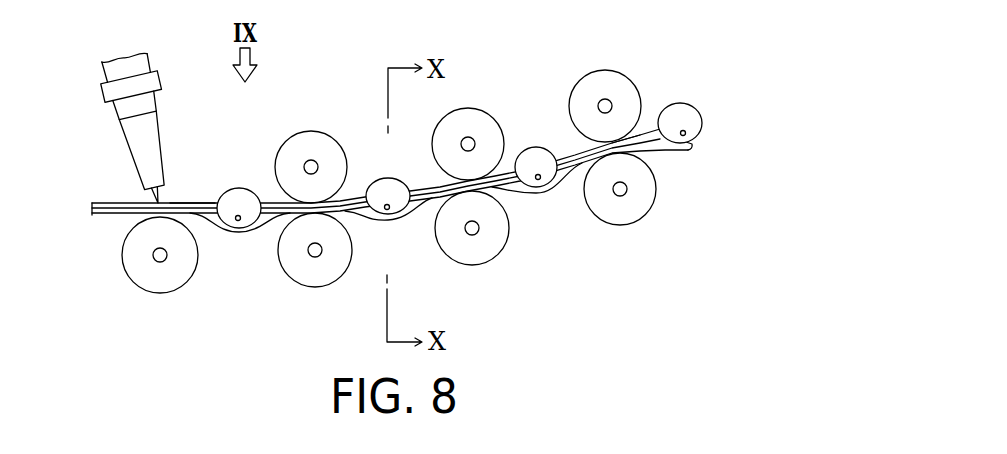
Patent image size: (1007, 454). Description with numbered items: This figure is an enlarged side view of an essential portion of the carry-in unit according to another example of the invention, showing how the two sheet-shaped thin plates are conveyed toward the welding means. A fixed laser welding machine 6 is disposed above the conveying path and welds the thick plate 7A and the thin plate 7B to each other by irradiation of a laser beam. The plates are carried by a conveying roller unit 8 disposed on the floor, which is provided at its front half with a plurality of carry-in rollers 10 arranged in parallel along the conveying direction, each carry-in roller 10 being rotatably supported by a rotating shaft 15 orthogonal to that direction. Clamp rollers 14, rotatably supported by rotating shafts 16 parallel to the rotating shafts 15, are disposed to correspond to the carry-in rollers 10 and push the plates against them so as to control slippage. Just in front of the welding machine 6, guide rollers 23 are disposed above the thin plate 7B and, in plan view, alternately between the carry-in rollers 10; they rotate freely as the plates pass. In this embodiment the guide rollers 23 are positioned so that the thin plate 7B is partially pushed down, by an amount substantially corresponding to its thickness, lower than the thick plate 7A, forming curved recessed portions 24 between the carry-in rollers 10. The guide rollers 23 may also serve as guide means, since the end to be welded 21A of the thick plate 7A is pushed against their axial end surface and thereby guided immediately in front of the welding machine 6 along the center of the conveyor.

The laser welding machine 6 is at (128, 150).
The thick plate 7A is at (98, 203).
The thin plate 7B is at (98, 215).
The conveying roller unit 8 is at (678, 175).
The carry-in roller 10 is at (618, 218).
The clamp roller 14 is at (600, 78).
The rotating shaft 15 is at (627, 192).
The rotating shaft 16 is at (611, 105).
The end to be welded 21A is at (197, 207).
The guide roller 23 is at (234, 188).
The recessed portion 24 is at (234, 231).